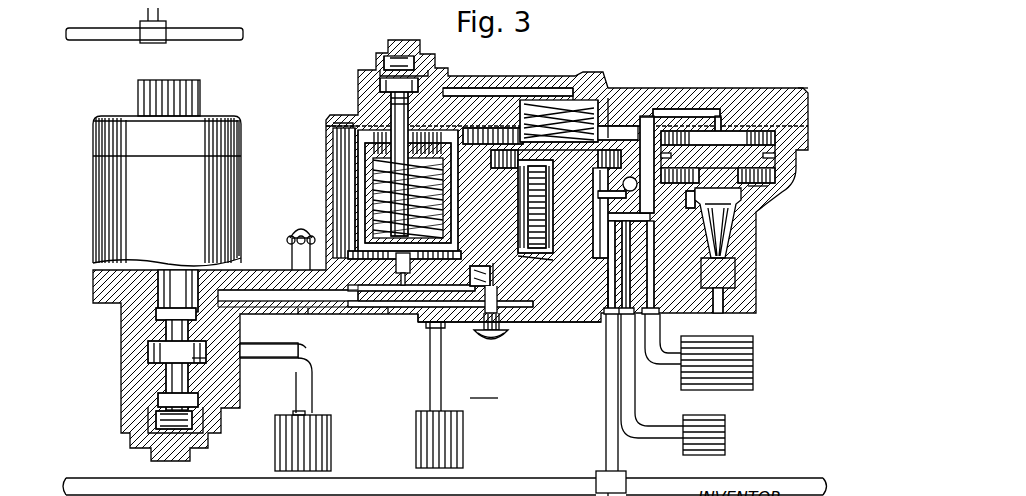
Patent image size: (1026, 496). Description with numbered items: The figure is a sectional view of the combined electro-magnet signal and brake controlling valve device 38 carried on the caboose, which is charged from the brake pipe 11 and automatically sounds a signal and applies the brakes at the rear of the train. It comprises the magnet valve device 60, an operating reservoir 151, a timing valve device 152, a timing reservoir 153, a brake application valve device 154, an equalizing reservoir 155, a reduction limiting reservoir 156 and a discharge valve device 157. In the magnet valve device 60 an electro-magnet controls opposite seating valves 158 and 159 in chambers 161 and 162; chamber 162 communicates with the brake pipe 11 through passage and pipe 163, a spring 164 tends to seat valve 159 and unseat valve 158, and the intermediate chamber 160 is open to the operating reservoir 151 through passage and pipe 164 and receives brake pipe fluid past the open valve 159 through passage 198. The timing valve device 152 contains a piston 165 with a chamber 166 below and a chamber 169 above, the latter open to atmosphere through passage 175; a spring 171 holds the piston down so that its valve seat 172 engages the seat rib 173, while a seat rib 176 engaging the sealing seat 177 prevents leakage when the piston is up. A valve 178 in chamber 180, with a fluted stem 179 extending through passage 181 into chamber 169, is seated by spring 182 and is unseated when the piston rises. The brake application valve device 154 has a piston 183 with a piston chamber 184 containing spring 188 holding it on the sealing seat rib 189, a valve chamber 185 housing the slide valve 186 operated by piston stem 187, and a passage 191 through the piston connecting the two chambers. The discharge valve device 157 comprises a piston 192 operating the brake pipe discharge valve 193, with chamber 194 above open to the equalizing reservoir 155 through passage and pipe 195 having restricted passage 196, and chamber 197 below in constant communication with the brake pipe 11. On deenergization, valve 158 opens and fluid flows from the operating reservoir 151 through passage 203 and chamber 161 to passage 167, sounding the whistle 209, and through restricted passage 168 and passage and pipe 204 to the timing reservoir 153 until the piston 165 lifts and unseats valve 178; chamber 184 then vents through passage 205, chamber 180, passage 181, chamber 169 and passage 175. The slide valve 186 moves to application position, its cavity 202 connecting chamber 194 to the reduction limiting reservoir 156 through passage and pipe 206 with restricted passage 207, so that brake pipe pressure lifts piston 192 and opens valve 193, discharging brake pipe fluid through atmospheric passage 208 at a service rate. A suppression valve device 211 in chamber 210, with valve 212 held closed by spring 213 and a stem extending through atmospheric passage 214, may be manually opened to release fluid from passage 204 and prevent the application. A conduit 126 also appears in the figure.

The brake pipe 11 is at (203, 22).
The combined electro-magnet signal and brake controlling valve device 38 is at (484, 386).
The magnet valve device 60 is at (236, 110).
The conduit 126 is at (816, 48).
The operating reservoir 151 is at (323, 428).
The timing valve device 152 is at (330, 165).
The timing reservoir 153 is at (456, 428).
The brake application valve device 154 is at (560, 314).
The equalizing reservoir 155 is at (738, 326).
The reduction limiting reservoir 156 is at (676, 446).
The discharge valve device 157 is at (762, 202).
The valve 158 is at (150, 306).
The valve 159 is at (152, 392).
The chamber 160 is at (140, 344).
The chamber 161 is at (150, 275).
The chamber 162 is at (232, 370).
The passage and pipe 163 is at (215, 360).
The spring 164 is at (150, 412).
The piston 165 is at (510, 200).
The chamber 166 is at (300, 312).
The passage 167 is at (318, 296).
The restricted passage 168 is at (378, 314).
The chamber 169 is at (462, 122).
The spring 171 is at (358, 185).
The valve seat 172 is at (352, 215).
The seat rib 173 is at (404, 268).
The passage 175 is at (345, 102).
The seat rib 176 is at (322, 142).
The sealing seat 177 is at (320, 116).
The valve 178 is at (366, 70).
The fluted stem 179 is at (402, 112).
The chamber 180 is at (374, 78).
The passage 181 is at (398, 96).
The spring 182 is at (390, 46).
The piston 183 is at (612, 128).
The piston chamber 184 is at (600, 118).
The valve chamber 185 is at (510, 232).
The slide valve 186 is at (538, 184).
The piston stem 187 is at (488, 262).
The spring 188 is at (530, 100).
The sealing seat rib 189 is at (510, 180).
The passage 191 is at (556, 159).
The piston 192 is at (728, 146).
The brake pipe discharge valve 193 is at (716, 208).
The chamber 194 is at (734, 124).
The passage and pipe 195 is at (684, 101).
The restricted passage 196 is at (676, 190).
The chamber 197 is at (758, 172).
The passage 198 is at (200, 350).
The cavity 202 is at (538, 202).
The passage 203 is at (160, 320).
The passage and pipe 204 is at (394, 307).
The passage 205 is at (522, 82).
The passage and pipe 206 is at (648, 398).
The restricted passage 207 is at (540, 226).
The atmospheric passage 208 is at (716, 285).
The whistle 209 is at (286, 254).
The chamber 210 is at (508, 250).
The suppression valve device 211 is at (494, 318).
The valve 212 is at (462, 262).
The spring 213 is at (490, 288).
The atmospheric passage 214 is at (496, 328).